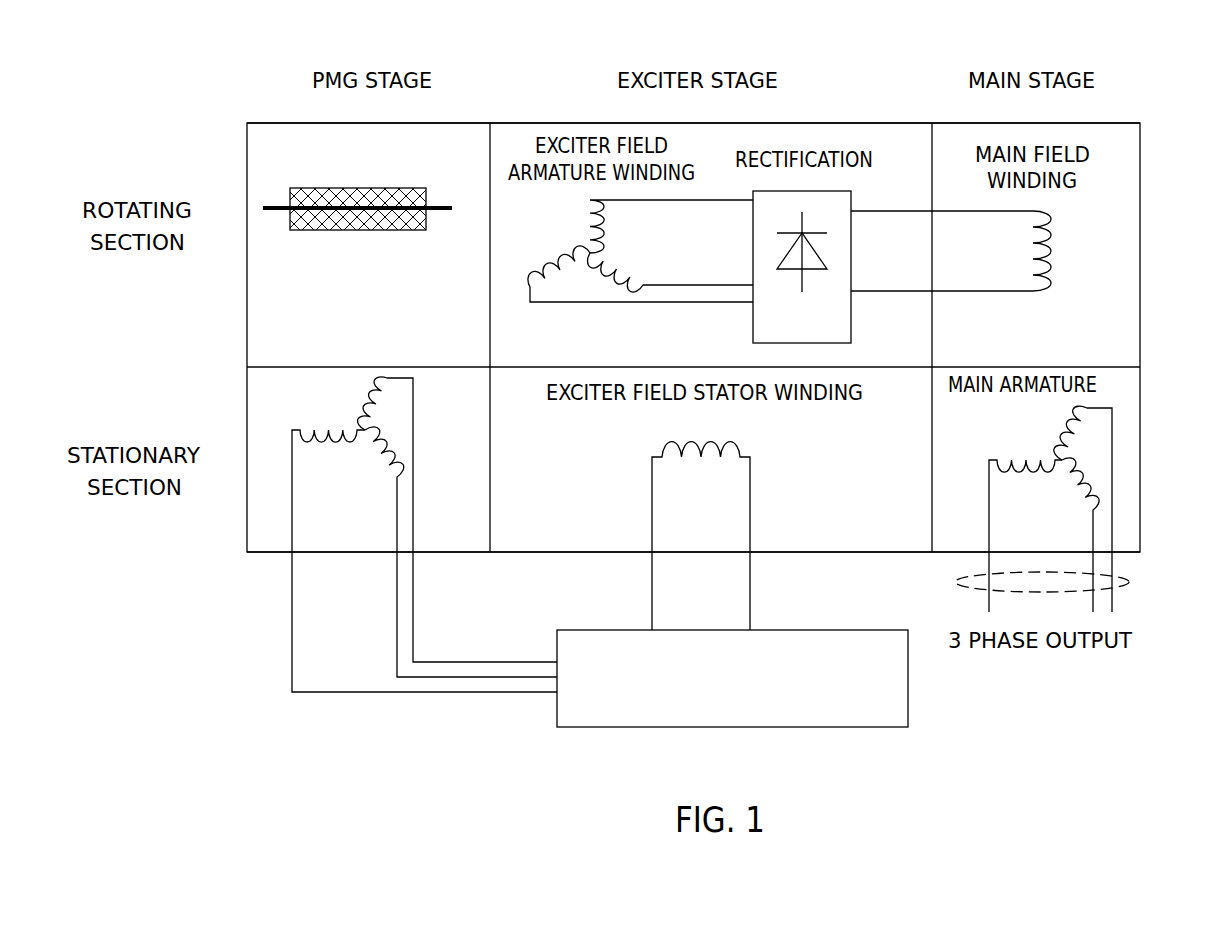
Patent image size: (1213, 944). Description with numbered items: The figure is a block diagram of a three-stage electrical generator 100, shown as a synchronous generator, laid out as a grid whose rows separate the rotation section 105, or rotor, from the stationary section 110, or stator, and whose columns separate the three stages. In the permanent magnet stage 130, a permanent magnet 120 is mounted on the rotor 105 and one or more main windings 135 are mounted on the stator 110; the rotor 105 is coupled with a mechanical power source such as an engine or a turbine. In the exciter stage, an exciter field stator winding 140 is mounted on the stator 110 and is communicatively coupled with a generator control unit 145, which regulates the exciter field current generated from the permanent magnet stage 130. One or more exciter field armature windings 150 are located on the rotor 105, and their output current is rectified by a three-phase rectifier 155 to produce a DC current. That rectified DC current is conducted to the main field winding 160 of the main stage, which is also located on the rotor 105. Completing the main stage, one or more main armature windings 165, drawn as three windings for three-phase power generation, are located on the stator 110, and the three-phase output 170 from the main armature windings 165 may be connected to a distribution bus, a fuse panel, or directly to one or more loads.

The electrical generator 100 is at (205, 716).
The rotation section 105 is at (292, 333).
The stationary section 110 is at (292, 400).
The permanent magnet 120 is at (402, 231).
The permanent magnet stage 130 is at (205, 68).
The main windings 135 is at (378, 456).
The exciter field stator winding 140 is at (726, 440).
The generator control unit 145 is at (868, 710).
The exciter field armature windings 150 is at (581, 249).
The three-phase rectifier 155 is at (819, 330).
The main field winding 160 is at (1040, 292).
The main armature windings 165 is at (1076, 486).
The three-phase output 170 is at (1129, 580).